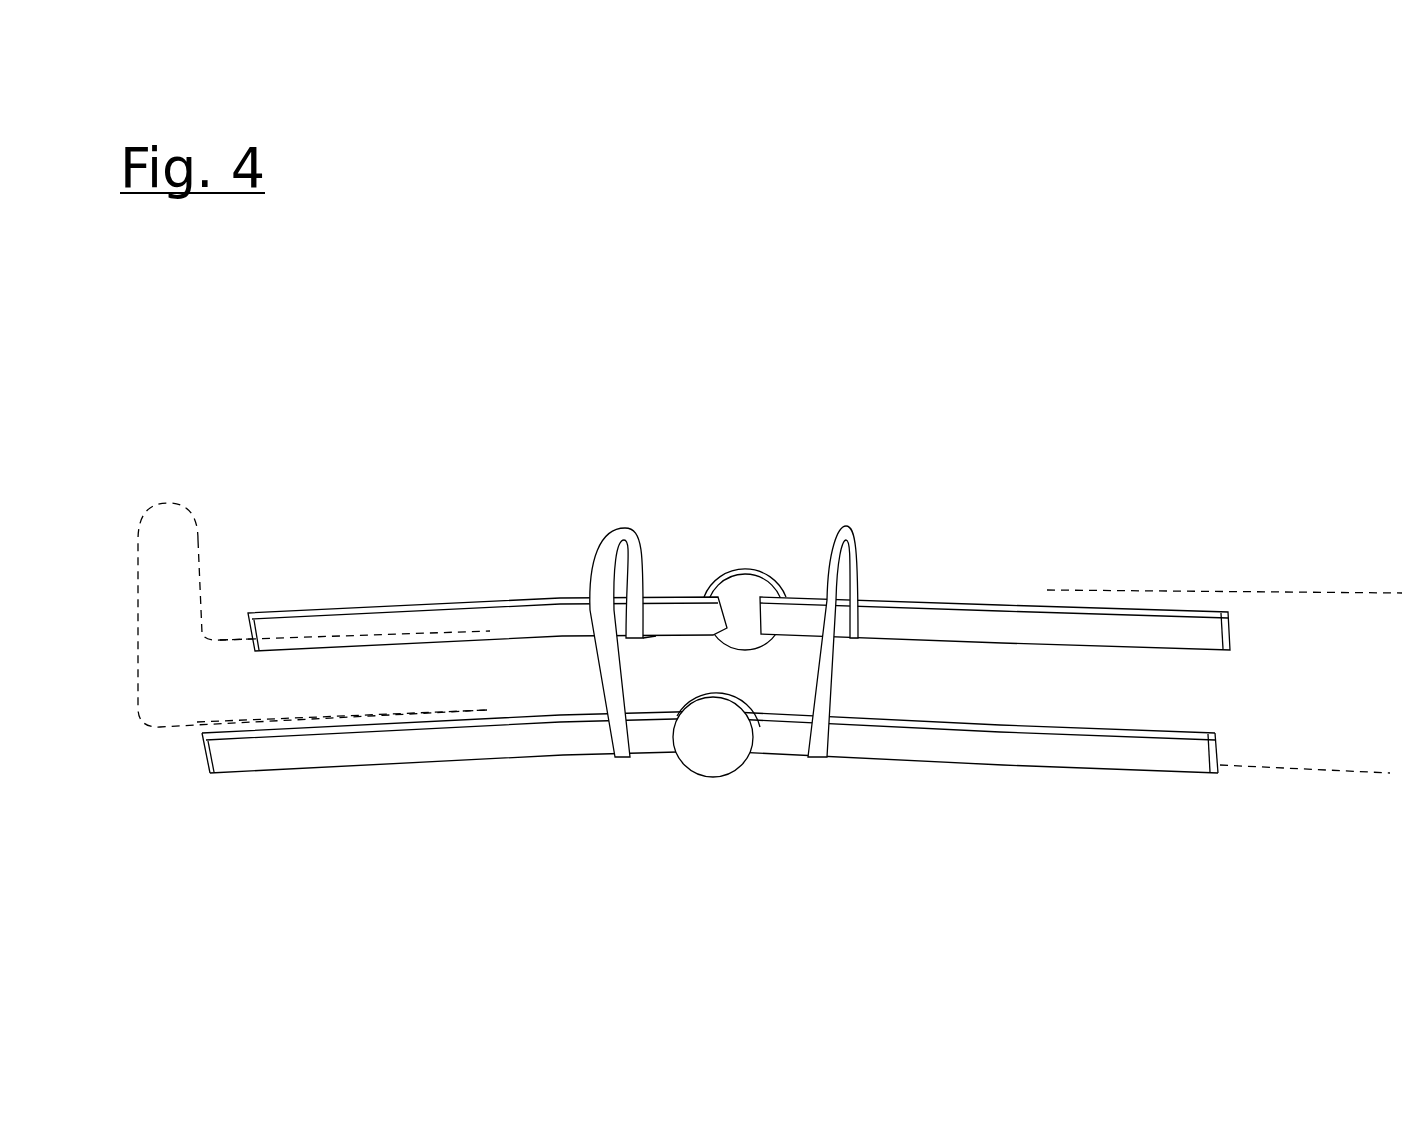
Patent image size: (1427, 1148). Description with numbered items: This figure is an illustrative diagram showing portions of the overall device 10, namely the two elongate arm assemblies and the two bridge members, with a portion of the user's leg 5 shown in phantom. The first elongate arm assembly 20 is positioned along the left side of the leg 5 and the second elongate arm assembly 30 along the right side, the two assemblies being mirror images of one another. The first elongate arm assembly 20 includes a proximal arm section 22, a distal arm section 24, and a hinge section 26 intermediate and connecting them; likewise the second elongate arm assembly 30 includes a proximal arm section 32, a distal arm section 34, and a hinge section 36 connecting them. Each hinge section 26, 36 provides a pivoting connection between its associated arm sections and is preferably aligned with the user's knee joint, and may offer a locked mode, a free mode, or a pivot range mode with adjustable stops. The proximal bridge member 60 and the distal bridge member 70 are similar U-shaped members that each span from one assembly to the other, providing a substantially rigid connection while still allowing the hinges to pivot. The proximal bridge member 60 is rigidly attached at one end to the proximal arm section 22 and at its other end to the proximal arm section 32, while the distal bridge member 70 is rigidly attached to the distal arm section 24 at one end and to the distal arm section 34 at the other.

The leg 5 is at (305, 414).
The overall device 10 is at (1159, 129).
The first elongate arm assembly 20 is at (883, 1021).
The proximal arm section 22 is at (1087, 847).
The distal arm section 24 is at (588, 849).
The hinge section 26 is at (797, 849).
The second elongate arm assembly 30 is at (905, 347).
The proximal arm section 32 is at (1152, 507).
The distal arm section 34 is at (557, 511).
The hinge section 36 is at (817, 509).
The proximal bridge member 60 is at (1243, 322).
The distal bridge member 70 is at (620, 535).